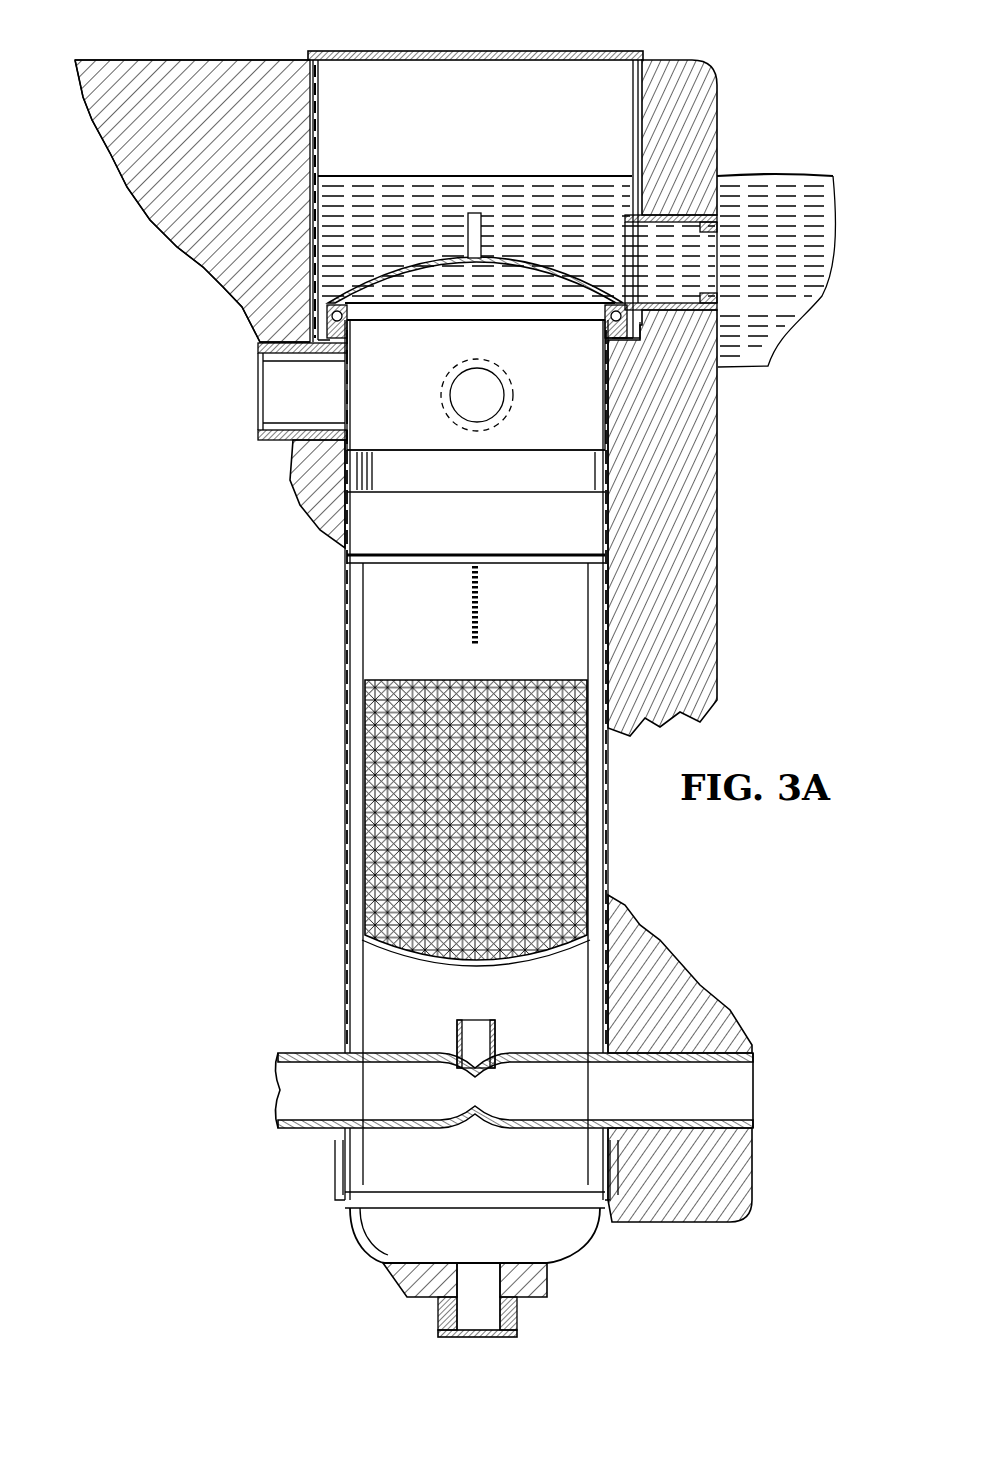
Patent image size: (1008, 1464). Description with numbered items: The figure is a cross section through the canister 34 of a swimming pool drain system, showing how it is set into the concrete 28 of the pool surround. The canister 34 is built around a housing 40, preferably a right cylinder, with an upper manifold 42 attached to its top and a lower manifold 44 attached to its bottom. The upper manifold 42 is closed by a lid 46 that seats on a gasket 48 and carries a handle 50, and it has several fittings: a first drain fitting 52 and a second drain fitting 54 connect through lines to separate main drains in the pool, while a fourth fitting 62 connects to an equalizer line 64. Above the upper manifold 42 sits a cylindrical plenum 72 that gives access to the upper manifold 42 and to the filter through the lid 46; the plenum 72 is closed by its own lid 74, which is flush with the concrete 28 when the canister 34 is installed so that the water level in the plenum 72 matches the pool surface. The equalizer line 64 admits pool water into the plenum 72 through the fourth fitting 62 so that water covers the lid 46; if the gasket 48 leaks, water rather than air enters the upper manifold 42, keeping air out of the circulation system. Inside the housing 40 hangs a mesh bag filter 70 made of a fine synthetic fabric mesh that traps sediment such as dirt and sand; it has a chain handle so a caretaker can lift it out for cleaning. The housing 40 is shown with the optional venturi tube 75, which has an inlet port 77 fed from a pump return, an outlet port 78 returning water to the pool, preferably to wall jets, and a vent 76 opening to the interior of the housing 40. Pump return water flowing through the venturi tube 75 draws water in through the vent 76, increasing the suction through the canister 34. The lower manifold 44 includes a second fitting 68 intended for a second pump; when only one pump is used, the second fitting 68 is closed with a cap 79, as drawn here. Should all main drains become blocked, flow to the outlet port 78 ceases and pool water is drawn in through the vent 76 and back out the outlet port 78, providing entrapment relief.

The concrete 28 is at (223, 58).
The lid 74 is at (375, 49).
The plenum 72 is at (318, 106).
The lid 46 is at (367, 283).
The handle 50 is at (474, 212).
The canister 34 is at (228, 305).
The gasket 48 is at (350, 320).
The first drain fitting 52 is at (466, 372).
The equalizer line 64 is at (690, 304).
The fourth fitting 62 is at (672, 320).
The second drain fitting 54 is at (263, 442).
The upper manifold 42 is at (286, 452).
The housing 40 is at (343, 668).
The mesh bag filter 70 is at (400, 893).
The vent 76 is at (456, 1040).
The venturi tube 75 is at (534, 1053).
The inlet port 77 is at (278, 1068).
The outlet port 78 is at (757, 1072).
The lower manifold 44 is at (353, 1242).
The cap 79 is at (438, 1330).
The second fitting 68 is at (518, 1330).